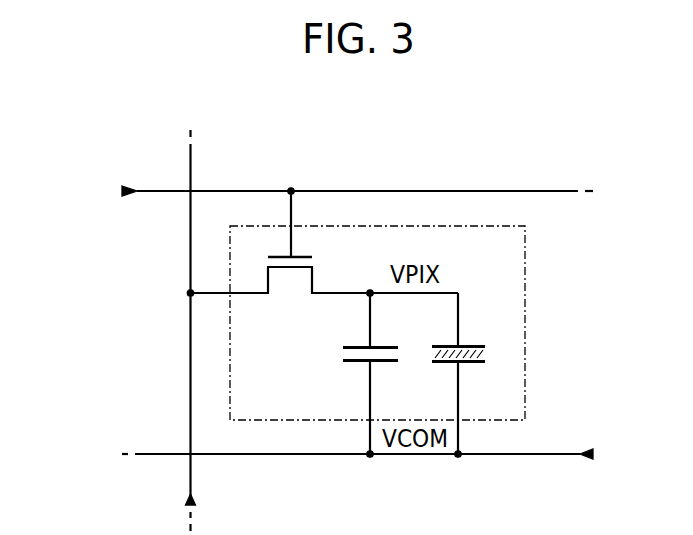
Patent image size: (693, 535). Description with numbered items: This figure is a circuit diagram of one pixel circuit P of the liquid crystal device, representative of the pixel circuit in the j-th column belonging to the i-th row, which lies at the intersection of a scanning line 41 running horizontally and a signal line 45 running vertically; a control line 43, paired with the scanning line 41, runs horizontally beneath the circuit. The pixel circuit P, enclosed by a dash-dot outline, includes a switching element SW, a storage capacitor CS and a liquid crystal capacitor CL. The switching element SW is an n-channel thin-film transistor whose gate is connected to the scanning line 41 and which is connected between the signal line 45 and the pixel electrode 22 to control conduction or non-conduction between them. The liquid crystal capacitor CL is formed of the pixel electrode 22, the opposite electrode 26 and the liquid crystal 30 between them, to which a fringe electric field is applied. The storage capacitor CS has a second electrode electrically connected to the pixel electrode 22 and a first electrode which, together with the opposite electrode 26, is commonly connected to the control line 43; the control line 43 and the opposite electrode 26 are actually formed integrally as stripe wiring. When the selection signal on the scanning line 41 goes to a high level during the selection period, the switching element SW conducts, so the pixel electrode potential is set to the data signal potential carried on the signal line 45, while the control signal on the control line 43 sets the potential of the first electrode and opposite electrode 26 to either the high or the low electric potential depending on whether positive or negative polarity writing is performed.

The scanning line 41 is at (462, 190).
The signal line 45 is at (189, 400).
The control line 43 is at (485, 455).
The pixel circuit P is at (525, 257).
The switching element SW is at (293, 268).
The storage capacitor CS is at (353, 375).
The liquid crystal capacitor CL is at (533, 375).
The pixel electrode 22 is at (485, 346).
The liquid crystal 30 is at (487, 354).
The opposite electrode 26 is at (485, 362).